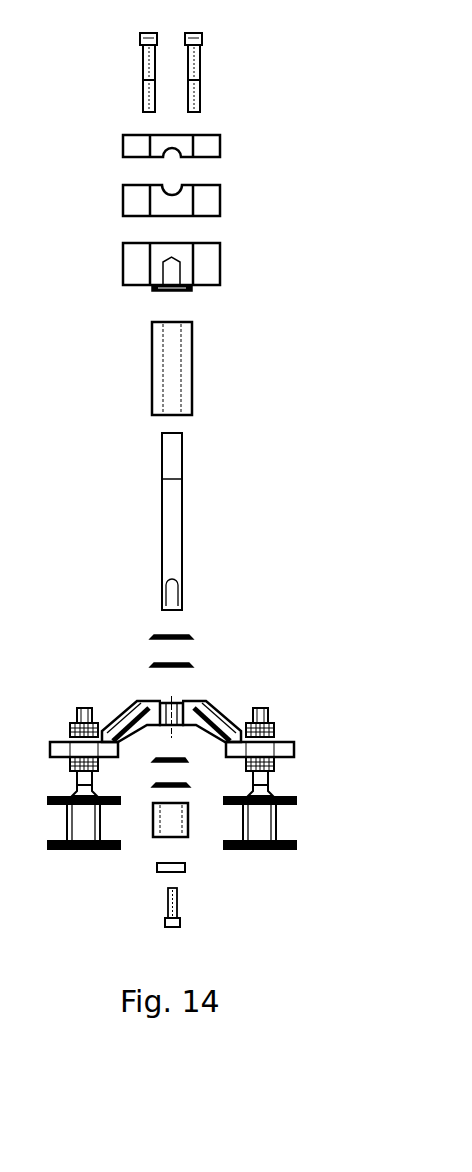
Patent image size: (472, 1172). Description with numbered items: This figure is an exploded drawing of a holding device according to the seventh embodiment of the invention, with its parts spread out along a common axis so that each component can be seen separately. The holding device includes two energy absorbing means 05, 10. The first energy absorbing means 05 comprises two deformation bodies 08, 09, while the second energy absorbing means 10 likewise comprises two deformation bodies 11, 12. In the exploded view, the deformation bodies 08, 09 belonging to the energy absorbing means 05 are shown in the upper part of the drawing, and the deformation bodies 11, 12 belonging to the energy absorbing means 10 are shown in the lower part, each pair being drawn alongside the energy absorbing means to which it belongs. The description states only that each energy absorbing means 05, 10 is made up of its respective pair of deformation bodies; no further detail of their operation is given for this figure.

The energy absorbing means 05 is at (213, 637).
The deformation body 08 is at (140, 369).
The deformation body 09 is at (148, 647).
The energy absorbing means 10 is at (215, 812).
The deformation body 11 is at (157, 770).
The deformation body 12 is at (168, 838).